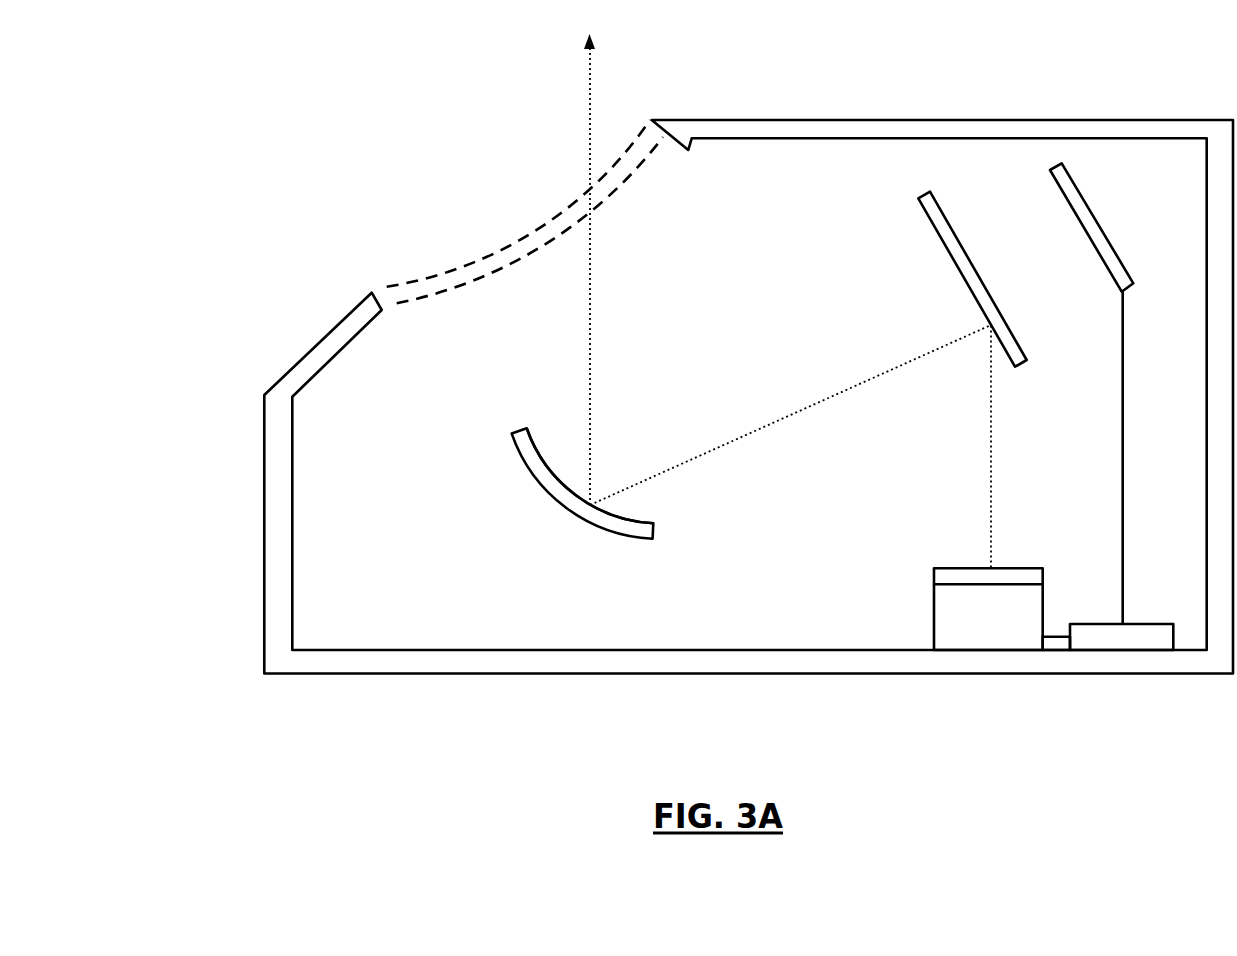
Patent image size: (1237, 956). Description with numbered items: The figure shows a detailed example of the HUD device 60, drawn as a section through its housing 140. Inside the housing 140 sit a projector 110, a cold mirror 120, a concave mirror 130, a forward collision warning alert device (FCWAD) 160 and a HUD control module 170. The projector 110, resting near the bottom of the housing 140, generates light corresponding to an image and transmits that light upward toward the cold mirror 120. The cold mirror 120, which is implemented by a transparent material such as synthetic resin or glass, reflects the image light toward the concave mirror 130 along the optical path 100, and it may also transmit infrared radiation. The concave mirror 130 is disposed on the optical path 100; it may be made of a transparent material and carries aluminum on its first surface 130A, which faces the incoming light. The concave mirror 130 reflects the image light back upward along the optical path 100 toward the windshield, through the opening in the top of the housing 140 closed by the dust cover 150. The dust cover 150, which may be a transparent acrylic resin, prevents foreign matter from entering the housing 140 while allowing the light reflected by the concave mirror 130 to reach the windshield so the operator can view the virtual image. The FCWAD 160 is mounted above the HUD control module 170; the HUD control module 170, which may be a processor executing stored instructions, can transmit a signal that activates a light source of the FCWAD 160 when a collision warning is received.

The HUD device 60 is at (255, 190).
The optical path 100 is at (755, 432).
The projector 110 is at (934, 600).
The cold mirror 120 is at (1023, 345).
The concave mirror 130 is at (527, 477).
The first surface 130A is at (612, 513).
The housing 140 is at (264, 513).
The dust cover 150 is at (463, 257).
The forward collision warning alert device 160 is at (1102, 223).
The HUD control module 170 is at (1148, 624).